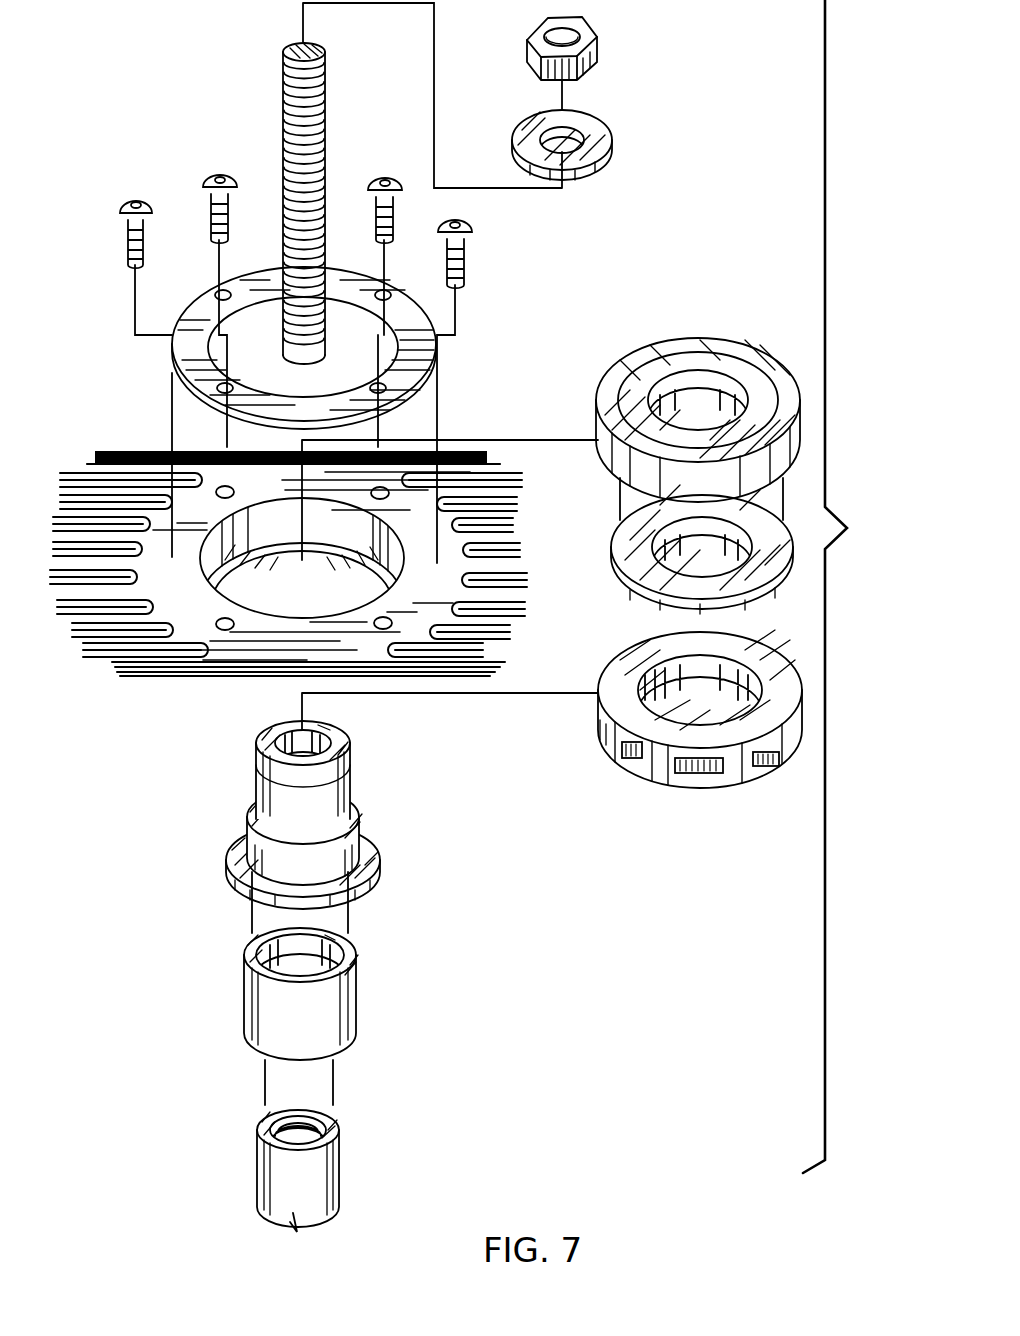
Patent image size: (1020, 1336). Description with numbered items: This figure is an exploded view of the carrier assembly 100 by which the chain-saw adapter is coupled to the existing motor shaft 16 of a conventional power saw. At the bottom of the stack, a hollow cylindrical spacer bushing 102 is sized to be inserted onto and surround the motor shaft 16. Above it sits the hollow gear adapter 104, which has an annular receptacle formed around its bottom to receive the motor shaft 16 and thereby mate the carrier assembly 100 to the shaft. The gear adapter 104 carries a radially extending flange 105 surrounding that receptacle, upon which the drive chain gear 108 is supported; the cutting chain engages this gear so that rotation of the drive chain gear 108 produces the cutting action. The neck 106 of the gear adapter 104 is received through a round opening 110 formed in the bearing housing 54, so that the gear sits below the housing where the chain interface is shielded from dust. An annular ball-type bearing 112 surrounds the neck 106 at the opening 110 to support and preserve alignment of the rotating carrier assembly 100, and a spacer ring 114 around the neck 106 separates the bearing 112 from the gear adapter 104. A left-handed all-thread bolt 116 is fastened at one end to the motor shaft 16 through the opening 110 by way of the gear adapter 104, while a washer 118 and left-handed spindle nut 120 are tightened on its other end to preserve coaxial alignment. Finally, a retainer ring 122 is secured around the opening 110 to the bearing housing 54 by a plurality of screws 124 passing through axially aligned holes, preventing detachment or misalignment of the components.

The carrier assembly 100 is at (850, 586).
The left-handed all-thread bolt 116 is at (282, 112).
The left-handed spindle nut 120 is at (590, 67).
The washer 118 is at (592, 164).
The screws 124 is at (203, 182).
The retainer ring 122 is at (172, 344).
The bearing housing 54 is at (102, 655).
The round opening 110 is at (293, 594).
The annular ball-type bearing 112 is at (667, 338).
The spacer ring 114 is at (638, 587).
The drive chain gear 108 is at (688, 788).
The neck 106 is at (257, 780).
The gear adapter 104 is at (248, 813).
The radially extending flange 105 is at (253, 893).
The spacer bushing 102 is at (245, 1008).
The motor shaft 16 is at (257, 1180).